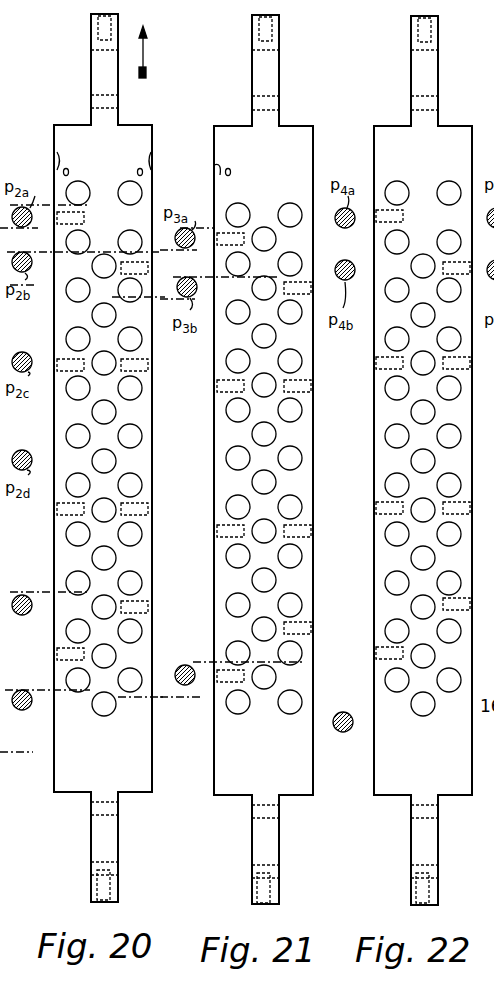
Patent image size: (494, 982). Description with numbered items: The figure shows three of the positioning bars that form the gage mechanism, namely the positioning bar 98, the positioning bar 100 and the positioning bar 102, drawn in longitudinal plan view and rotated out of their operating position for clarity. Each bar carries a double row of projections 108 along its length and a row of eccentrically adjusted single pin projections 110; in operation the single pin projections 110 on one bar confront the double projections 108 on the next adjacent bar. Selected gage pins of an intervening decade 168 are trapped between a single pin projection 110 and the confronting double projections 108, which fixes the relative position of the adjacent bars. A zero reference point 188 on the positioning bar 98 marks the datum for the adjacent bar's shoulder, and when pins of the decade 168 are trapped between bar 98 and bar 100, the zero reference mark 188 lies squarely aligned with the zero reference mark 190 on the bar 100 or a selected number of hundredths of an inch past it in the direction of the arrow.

In FIG. 20, the positioning bar 98 is at (139, 125).
In FIG. 21, the positioning bar 100 is at (304, 126).
In FIG. 22, the positioning bar 102 is at (462, 126).
In FIG. 20, the double row projections 108 is at (125, 182).
In FIG. 21, the double row projections 108 is at (243, 712).
In FIG. 22, the double row projections 108 is at (423, 448).
In FIG. 20, the single pin projections 110 is at (104, 717).
In FIG. 20, the decade of gage pins 168 is at (22, 710).
In FIG. 21, the decade of gage pins 168 is at (188, 686).
In FIG. 22, the decade of gage pins 168 is at (342, 730).
In FIG. 20, the zero reference point 188 is at (57, 150).
In FIG. 21, the zero reference mark 190 is at (214, 166).